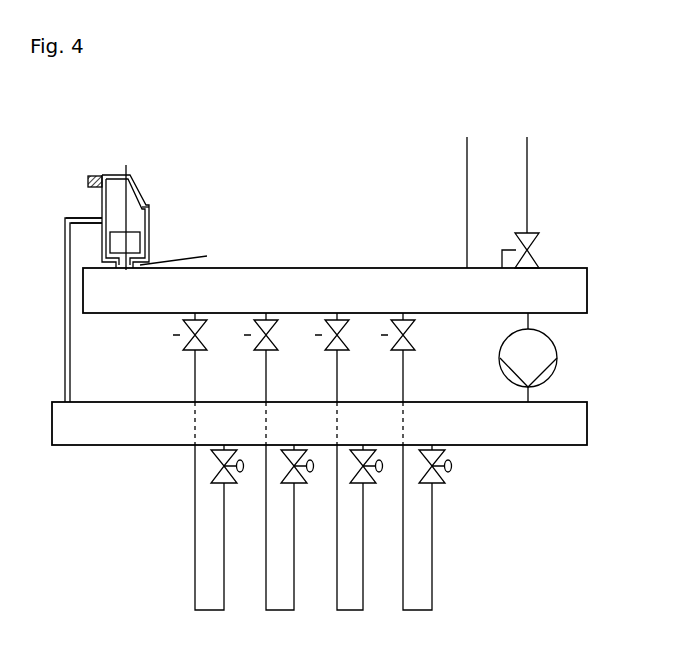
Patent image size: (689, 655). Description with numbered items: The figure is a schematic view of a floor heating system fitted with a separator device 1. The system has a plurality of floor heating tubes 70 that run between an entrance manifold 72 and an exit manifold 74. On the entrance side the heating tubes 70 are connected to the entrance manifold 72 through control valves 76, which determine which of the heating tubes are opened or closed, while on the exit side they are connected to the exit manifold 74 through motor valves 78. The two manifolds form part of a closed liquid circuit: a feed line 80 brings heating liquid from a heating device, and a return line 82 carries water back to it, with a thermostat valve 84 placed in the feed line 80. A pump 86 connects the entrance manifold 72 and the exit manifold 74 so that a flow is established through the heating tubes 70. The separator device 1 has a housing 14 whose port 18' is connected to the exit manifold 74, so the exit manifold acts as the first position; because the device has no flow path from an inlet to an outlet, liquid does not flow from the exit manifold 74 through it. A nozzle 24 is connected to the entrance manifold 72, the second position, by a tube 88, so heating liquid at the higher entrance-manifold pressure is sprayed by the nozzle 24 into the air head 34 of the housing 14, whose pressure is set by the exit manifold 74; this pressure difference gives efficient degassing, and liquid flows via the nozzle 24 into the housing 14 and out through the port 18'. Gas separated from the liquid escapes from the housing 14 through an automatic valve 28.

The separator device 1 is at (168, 178).
The housing 14 is at (149, 237).
The port 18' is at (189, 254).
The nozzle 24 is at (102, 219).
The valve 28 is at (97, 176).
The air head 34 is at (149, 207).
The floor heating tubes 70 is at (432, 590).
The entrance manifold 72 is at (588, 427).
The exit manifold 74 is at (588, 290).
The control valves 76 is at (445, 480).
The motor valves 78 is at (190, 348).
The feed line 80 is at (527, 140).
The return line 82 is at (467, 140).
The thermostat valve 84 is at (534, 244).
The pump 86 is at (558, 360).
The tube 88 is at (66, 330).